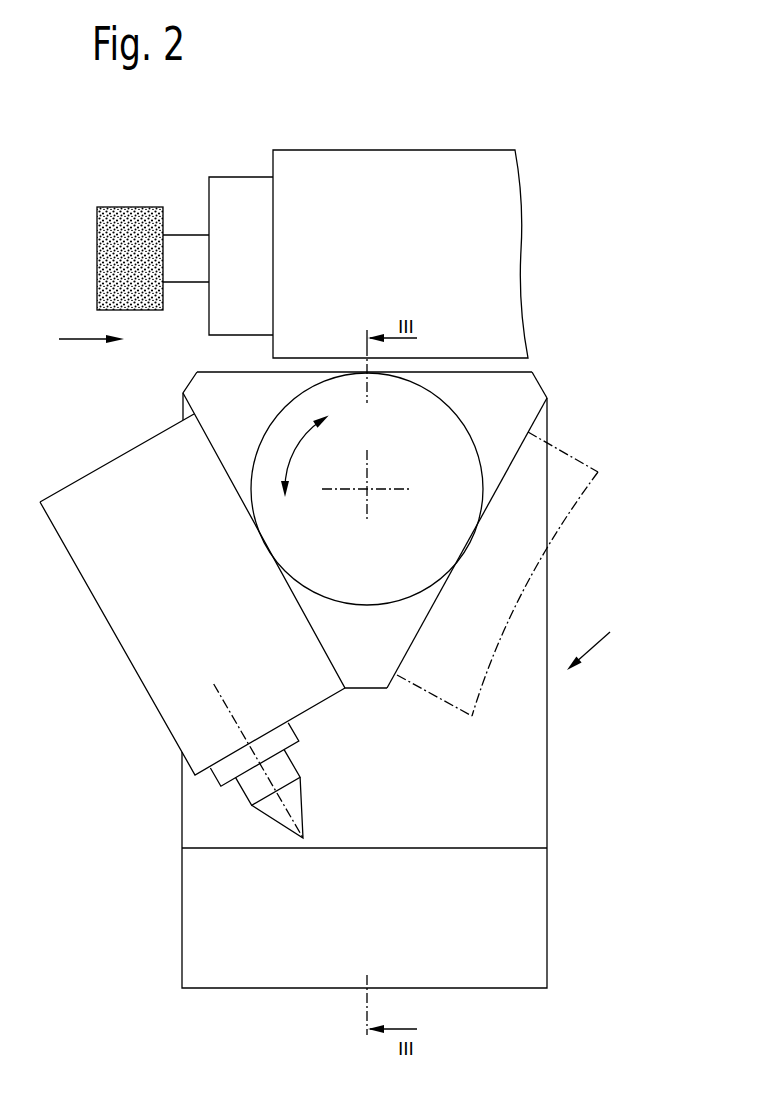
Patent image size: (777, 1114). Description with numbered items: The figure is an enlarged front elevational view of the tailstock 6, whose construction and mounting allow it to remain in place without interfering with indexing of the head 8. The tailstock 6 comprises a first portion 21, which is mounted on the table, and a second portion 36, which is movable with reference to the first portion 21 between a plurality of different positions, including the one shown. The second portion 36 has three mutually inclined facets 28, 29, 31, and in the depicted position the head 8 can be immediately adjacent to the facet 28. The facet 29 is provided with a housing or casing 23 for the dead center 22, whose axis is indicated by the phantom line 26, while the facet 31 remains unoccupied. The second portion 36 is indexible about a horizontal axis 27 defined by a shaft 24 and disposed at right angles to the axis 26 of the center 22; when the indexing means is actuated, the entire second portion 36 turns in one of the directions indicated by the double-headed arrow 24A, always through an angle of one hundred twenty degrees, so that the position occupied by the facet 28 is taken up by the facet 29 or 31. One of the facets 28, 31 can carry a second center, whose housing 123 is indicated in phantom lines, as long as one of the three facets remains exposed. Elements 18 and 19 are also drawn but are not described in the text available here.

The tailstock 6 is at (598, 638).
The head 8 is at (393, 167).
The control unit 18 is at (127, 212).
The feed direction 19 is at (79, 340).
The first portion 21 is at (513, 795).
The dead center 22 is at (267, 785).
The housing 23 is at (140, 635).
The shaft 24 is at (445, 462).
The double-headed arrow 24A is at (297, 443).
The axis of the center 26 is at (220, 695).
The horizontal axis 27 is at (372, 493).
The facet 28 is at (525, 367).
The facet 29 is at (193, 413).
The facet 31 is at (433, 605).
The second portion 36 is at (517, 415).
The housing of second center 123 is at (433, 677).